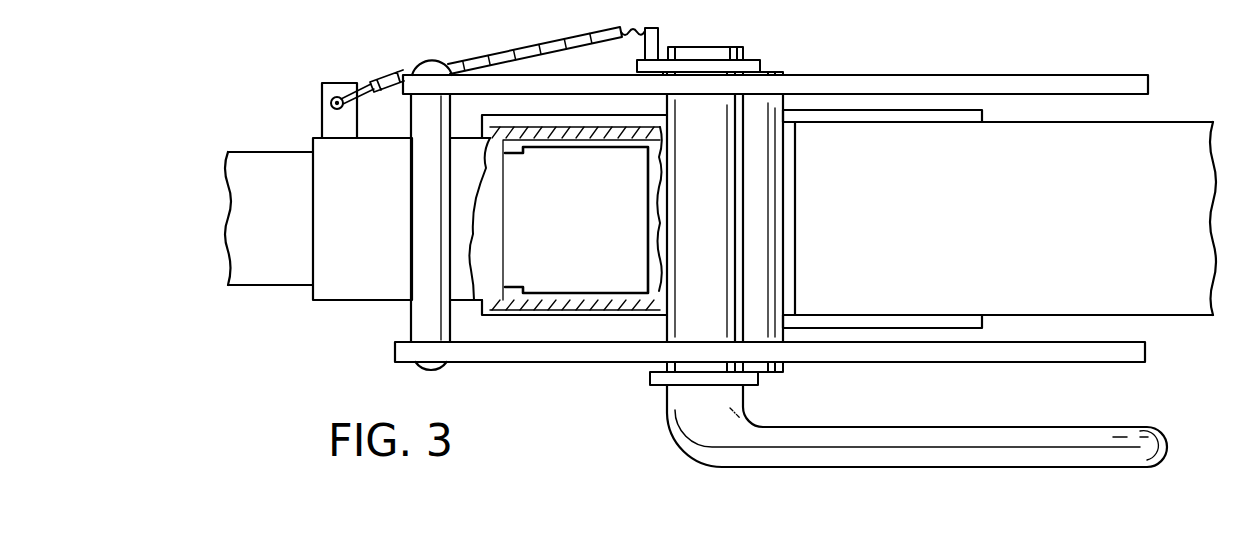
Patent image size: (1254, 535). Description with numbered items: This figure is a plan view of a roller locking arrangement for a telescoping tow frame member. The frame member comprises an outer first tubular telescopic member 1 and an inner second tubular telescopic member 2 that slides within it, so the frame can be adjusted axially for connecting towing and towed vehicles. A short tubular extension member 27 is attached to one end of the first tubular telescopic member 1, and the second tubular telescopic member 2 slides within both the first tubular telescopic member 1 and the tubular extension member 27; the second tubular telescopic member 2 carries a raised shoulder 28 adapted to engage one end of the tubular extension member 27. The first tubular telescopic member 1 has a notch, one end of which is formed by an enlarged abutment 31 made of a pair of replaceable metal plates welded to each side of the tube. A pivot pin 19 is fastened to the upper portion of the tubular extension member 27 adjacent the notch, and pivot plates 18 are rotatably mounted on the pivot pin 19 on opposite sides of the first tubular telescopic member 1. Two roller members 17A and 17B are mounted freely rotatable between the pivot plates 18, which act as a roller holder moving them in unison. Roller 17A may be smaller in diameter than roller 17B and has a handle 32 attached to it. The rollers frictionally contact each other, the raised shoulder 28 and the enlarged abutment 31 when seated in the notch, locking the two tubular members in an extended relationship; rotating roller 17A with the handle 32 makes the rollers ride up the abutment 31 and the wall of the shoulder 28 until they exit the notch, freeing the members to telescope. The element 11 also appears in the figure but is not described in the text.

The first tubular telescopic member 1 is at (1180, 122).
The second tubular telescopic member 2 is at (260, 152).
The flexible strap 11 is at (493, 52).
The roller member 17A is at (720, 200).
The roller member 17B is at (760, 240).
The pivot plates 18 is at (935, 75).
The pivot pin 19 is at (443, 380).
The tubular extension member 27 is at (335, 297).
The raised shoulder 28 is at (518, 290).
The enlarged abutment 31 is at (972, 118).
The handle 32 is at (1057, 425).